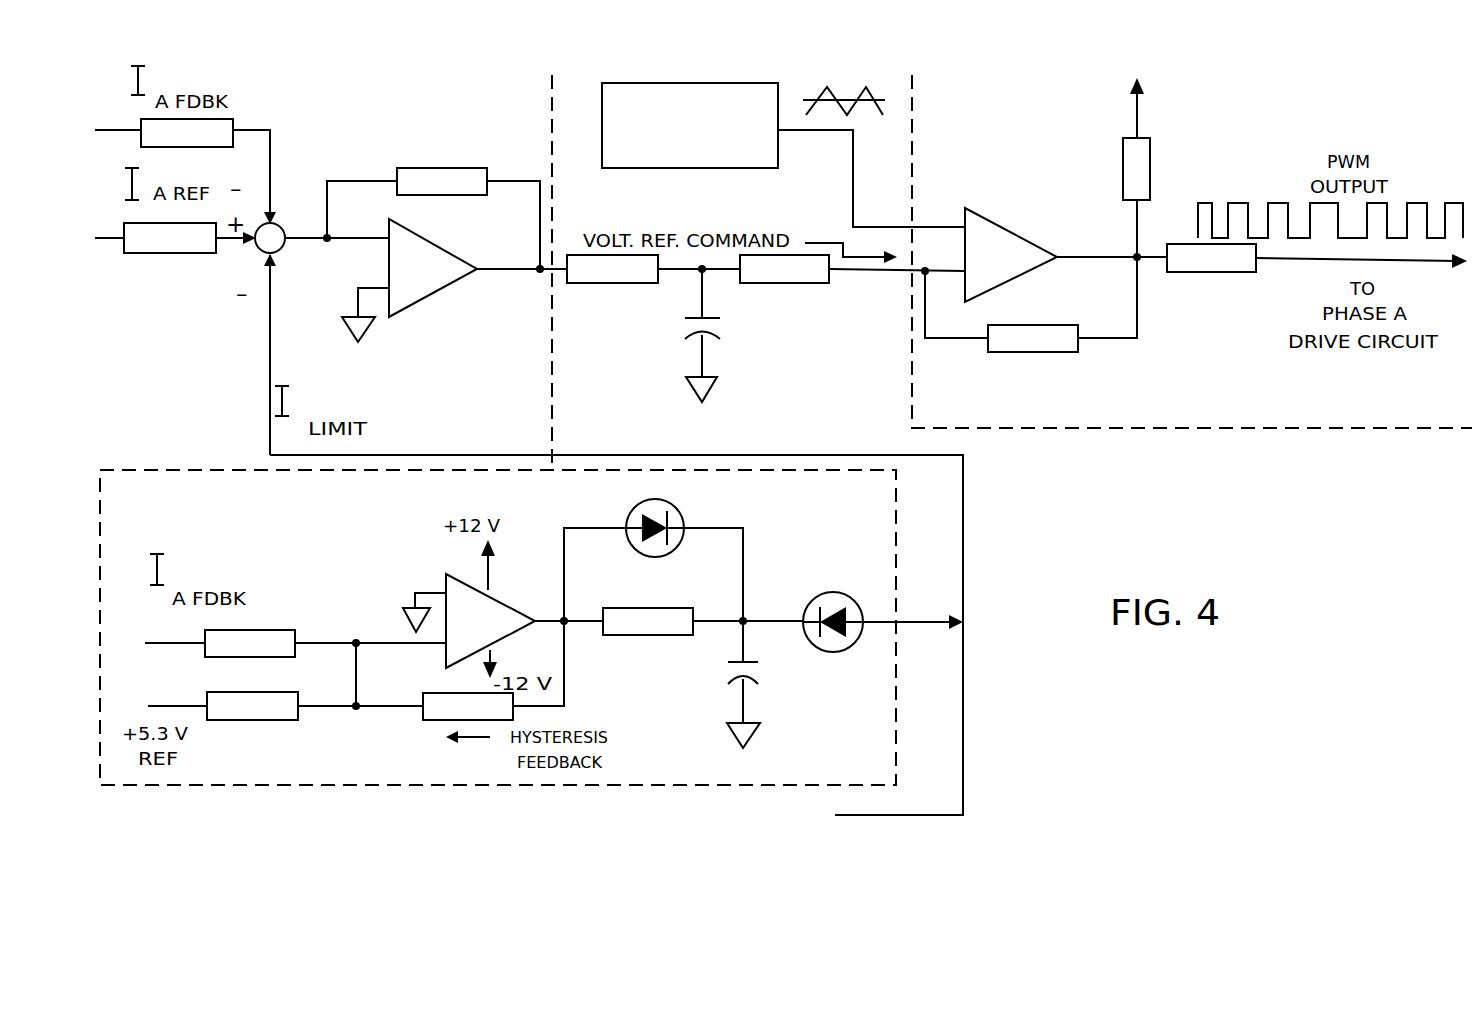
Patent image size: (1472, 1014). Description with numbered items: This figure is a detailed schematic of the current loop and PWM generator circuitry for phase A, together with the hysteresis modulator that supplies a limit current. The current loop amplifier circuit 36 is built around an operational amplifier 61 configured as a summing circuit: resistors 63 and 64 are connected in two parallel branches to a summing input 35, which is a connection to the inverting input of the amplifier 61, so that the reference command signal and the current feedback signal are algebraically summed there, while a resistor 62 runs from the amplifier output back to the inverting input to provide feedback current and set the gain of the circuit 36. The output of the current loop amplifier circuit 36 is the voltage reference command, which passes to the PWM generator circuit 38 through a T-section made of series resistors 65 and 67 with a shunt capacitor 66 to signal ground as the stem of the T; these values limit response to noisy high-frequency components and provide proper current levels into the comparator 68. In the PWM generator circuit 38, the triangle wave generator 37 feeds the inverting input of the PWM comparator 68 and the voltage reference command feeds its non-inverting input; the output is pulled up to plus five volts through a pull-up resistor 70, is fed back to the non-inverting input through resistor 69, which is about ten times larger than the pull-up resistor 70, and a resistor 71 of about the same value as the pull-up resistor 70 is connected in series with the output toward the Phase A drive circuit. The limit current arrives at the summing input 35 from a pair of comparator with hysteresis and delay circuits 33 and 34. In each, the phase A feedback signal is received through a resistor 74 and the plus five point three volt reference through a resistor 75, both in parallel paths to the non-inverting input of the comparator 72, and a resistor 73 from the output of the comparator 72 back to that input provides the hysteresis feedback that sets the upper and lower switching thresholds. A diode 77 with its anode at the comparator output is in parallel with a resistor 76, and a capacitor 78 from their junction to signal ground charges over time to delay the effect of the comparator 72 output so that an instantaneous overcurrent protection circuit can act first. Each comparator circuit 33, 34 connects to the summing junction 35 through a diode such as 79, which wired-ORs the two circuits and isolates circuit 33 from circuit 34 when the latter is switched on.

The comparator with hysteresis and delay circuit 33 is at (498, 627).
The comparator with hysteresis and delay circuit 34 is at (651, 816).
The summing input 35 is at (283, 225).
The current loop amplifier circuit 36 is at (441, 311).
The triangle wave generator 37 is at (655, 168).
The PWM generator circuit 38 is at (1192, 251).
The operational amplifier 61 is at (437, 290).
The resistor 62 is at (437, 168).
The resistor 63 is at (233, 122).
The resistor 64 is at (212, 253).
The series resistor 65 is at (645, 283).
The shunt capacitor 66 is at (708, 318).
The series resistor 67 is at (805, 283).
The PWM comparator 68 is at (1010, 235).
The resistor 69 is at (1015, 352).
The pull-up resistor 70 is at (1150, 178).
The resistor 71 is at (1198, 272).
The comparator 72 is at (505, 605).
The resistor 73 is at (422, 713).
The resistor 74 is at (262, 630).
The resistor 75 is at (232, 720).
The resistor 76 is at (615, 635).
The diode 77 is at (680, 515).
The capacitor 78 is at (747, 662).
The diode 79 is at (836, 595).